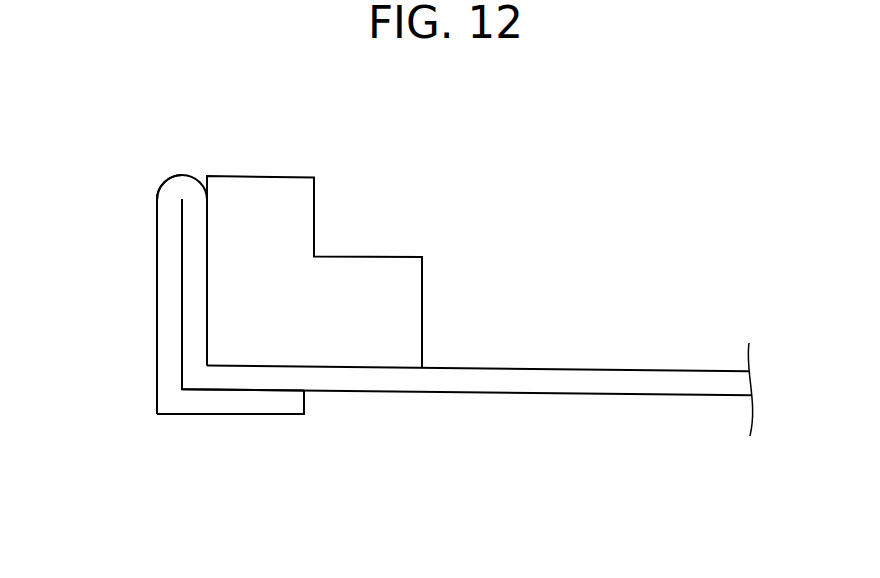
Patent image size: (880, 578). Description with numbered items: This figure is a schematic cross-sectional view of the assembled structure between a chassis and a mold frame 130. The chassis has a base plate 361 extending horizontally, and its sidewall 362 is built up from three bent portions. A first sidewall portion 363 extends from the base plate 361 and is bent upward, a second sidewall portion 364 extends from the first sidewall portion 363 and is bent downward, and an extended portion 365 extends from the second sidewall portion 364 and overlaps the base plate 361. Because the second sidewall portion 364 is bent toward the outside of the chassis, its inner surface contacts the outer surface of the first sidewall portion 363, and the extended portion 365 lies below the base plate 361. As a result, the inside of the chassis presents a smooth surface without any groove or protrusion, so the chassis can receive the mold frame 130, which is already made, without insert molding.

The sidewall 362 is at (165, 167).
The second sidewall portion 364 is at (170, 277).
The first sidewall portion 363 is at (197, 327).
The extended portion 365 is at (282, 408).
The mold frame 130 is at (227, 353).
The base plate 361 is at (388, 377).